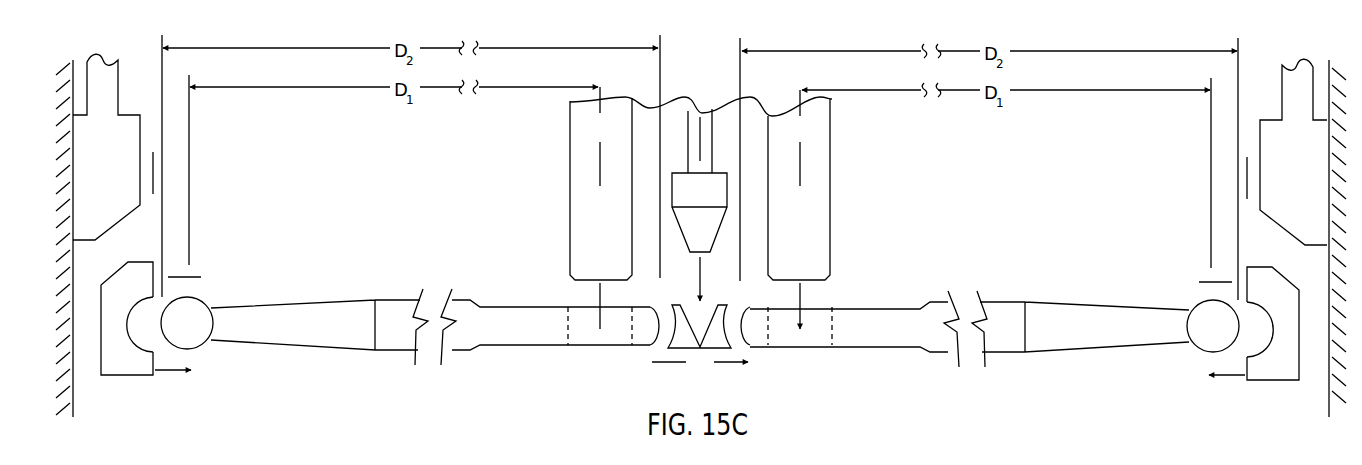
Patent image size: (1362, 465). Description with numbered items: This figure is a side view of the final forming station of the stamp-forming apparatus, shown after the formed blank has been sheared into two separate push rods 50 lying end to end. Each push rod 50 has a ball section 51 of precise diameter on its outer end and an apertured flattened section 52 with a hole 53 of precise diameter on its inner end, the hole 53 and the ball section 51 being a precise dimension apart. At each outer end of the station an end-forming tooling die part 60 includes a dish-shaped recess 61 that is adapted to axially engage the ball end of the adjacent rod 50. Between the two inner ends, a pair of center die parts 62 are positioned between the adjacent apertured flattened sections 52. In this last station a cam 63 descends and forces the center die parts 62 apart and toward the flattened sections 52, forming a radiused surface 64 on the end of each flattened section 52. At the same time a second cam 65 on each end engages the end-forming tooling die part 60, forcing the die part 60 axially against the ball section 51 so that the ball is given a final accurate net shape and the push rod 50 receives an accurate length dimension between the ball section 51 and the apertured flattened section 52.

The push rod 50 is at (435, 270).
The ball section 51 is at (203, 349).
The apertured flattened section 52 is at (641, 349).
The hole 53 is at (580, 348).
The end-forming tooling die part 60 is at (135, 377).
The dish-shaped recess 61 is at (136, 308).
The center die part 62 is at (693, 350).
The cam 63 is at (720, 238).
The radiused surface 64 is at (655, 306).
The second cam 65 is at (140, 121).